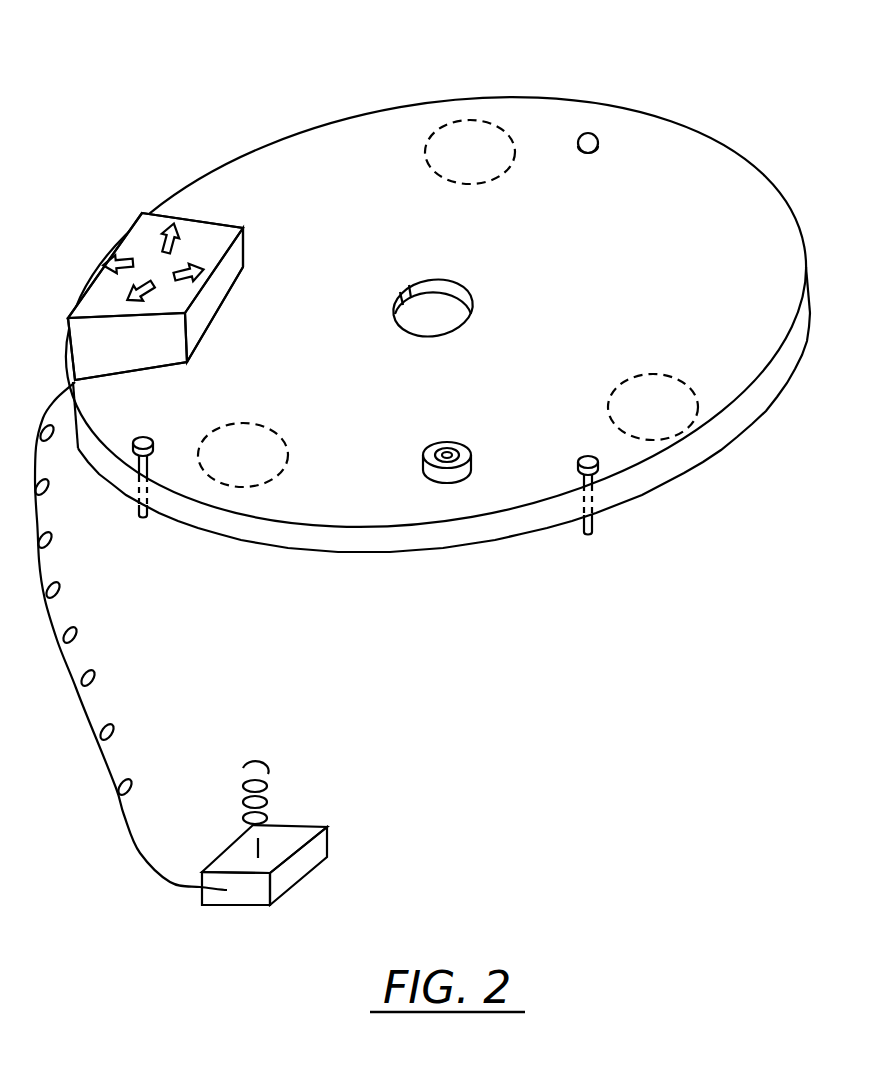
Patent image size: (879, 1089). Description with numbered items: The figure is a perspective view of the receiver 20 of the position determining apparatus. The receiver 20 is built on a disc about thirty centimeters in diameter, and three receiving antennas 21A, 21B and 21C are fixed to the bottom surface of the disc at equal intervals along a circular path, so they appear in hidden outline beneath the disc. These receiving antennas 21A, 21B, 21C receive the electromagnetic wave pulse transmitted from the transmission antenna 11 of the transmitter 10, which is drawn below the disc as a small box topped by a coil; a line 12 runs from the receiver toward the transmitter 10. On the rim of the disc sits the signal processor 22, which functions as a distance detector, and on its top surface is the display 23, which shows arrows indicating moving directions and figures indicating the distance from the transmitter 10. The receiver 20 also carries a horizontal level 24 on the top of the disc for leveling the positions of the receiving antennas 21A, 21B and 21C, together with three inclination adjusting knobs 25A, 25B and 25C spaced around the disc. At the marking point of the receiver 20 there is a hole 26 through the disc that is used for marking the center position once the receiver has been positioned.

The receiver 20 is at (703, 78).
The signal processor 22 is at (78, 337).
The display 23 is at (138, 226).
The hole 26 is at (462, 286).
The horizontal level 24 is at (457, 443).
The inclination adjusting knob 25A is at (130, 455).
The inclination adjusting knob 25B is at (578, 474).
The inclination adjusting knob 25C is at (588, 132).
The receiving antenna 21A is at (240, 477).
The receiving antenna 21B is at (660, 432).
The receiving antenna 21C is at (482, 127).
The cable 12 is at (92, 730).
The transmitter 10 is at (338, 857).
The transmission antenna 11 is at (270, 766).